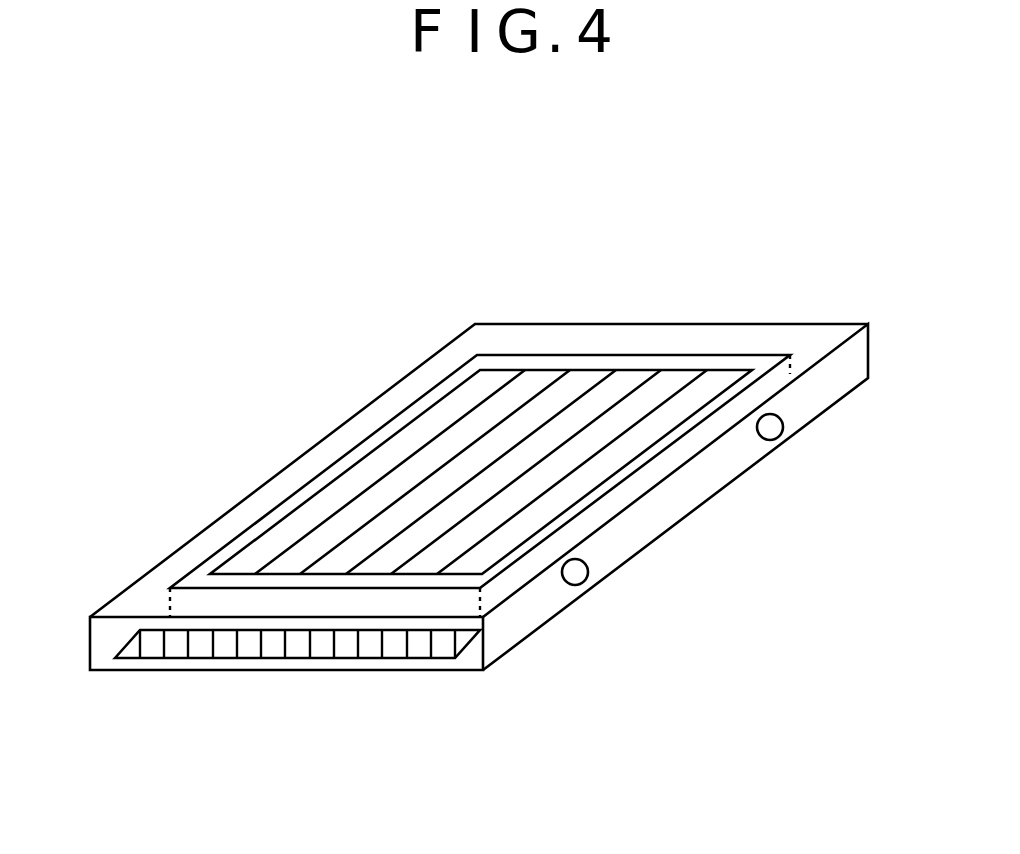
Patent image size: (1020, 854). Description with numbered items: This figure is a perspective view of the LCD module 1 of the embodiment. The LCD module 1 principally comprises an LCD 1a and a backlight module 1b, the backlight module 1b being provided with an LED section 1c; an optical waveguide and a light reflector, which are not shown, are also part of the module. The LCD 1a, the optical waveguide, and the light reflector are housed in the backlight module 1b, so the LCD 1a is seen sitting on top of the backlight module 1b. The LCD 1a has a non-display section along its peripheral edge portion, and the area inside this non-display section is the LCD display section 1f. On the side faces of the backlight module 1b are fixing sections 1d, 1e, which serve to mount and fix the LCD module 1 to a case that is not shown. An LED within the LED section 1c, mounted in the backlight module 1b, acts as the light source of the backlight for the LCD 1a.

The LCD module 1 is at (876, 249).
The LCD 1a is at (271, 513).
The backlight module 1b is at (683, 335).
The LED section 1c is at (272, 647).
The fixing section 1d is at (776, 440).
The fixing section 1e is at (581, 585).
The LCD display section 1f is at (395, 455).